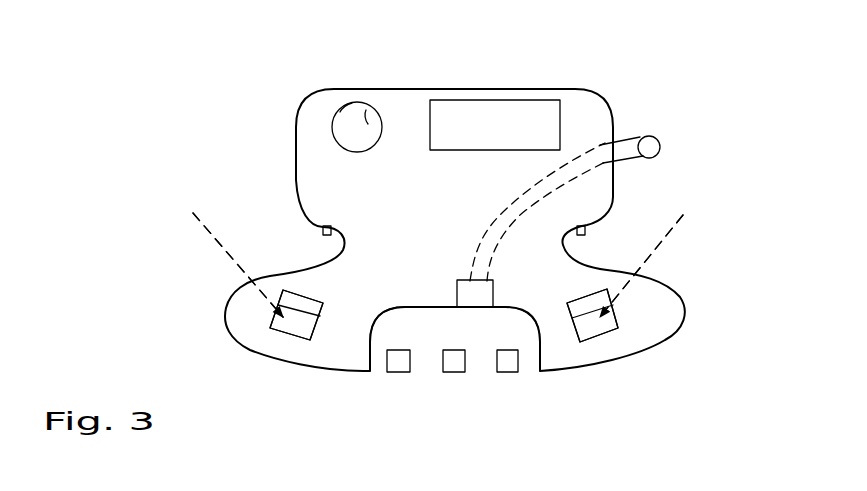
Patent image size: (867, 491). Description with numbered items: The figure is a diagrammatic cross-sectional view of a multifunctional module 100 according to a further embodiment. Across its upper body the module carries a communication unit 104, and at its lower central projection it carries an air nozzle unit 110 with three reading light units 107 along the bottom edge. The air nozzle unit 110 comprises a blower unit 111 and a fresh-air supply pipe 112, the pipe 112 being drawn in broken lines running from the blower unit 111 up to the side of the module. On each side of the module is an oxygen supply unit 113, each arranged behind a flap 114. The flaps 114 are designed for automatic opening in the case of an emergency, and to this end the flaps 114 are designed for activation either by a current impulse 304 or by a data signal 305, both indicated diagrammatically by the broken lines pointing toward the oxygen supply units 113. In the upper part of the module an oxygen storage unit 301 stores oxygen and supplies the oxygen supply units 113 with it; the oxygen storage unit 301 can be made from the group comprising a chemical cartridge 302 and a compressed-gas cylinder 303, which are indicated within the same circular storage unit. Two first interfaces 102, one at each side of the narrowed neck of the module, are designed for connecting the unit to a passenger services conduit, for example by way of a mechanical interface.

The electronic device 100 is at (262, 55).
The first interface 102 is at (323, 231).
The communication unit 104 is at (533, 123).
The reading light unit 107 is at (500, 360).
The air nozzle unit 110 is at (528, 360).
The blower unit 111 is at (470, 292).
The fresh-air supply pipe 112 is at (597, 148).
The oxygen supply unit 113 is at (268, 320).
The flap 114 is at (303, 330).
The oxygen storage unit 301 is at (348, 130).
The chemical cartridge 302 is at (347, 118).
The compressed-gas cylinder 303 is at (367, 123).
The current impulse 304 is at (208, 230).
The data signal 305 is at (227, 250).